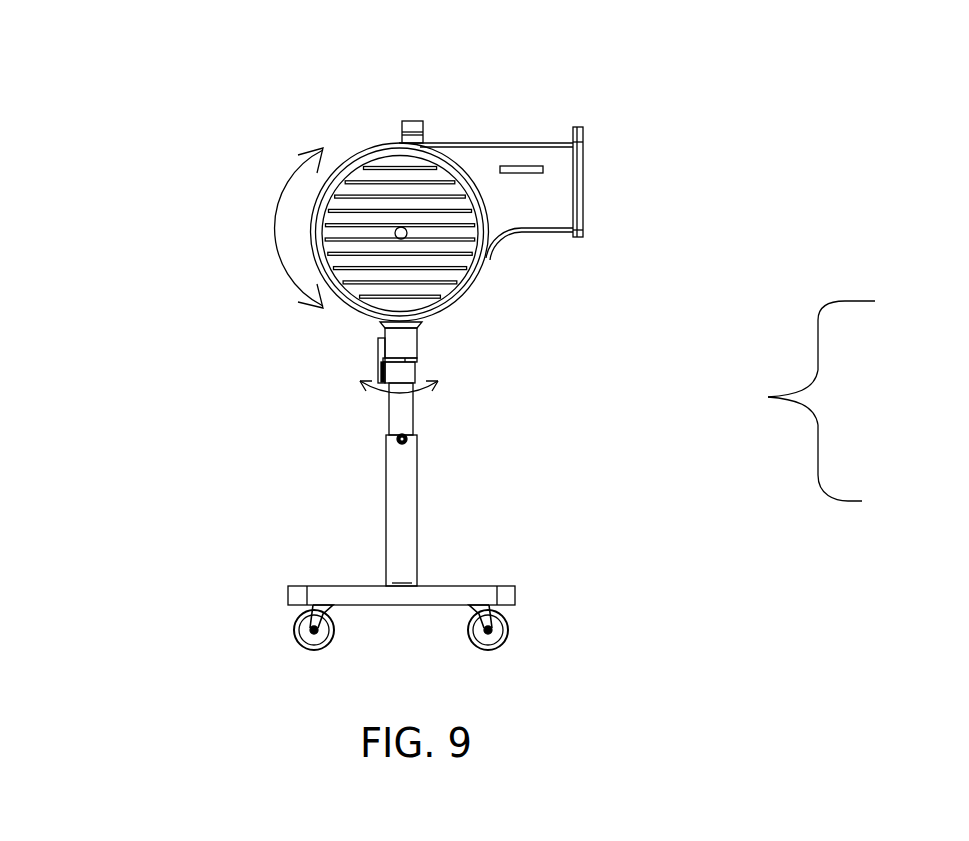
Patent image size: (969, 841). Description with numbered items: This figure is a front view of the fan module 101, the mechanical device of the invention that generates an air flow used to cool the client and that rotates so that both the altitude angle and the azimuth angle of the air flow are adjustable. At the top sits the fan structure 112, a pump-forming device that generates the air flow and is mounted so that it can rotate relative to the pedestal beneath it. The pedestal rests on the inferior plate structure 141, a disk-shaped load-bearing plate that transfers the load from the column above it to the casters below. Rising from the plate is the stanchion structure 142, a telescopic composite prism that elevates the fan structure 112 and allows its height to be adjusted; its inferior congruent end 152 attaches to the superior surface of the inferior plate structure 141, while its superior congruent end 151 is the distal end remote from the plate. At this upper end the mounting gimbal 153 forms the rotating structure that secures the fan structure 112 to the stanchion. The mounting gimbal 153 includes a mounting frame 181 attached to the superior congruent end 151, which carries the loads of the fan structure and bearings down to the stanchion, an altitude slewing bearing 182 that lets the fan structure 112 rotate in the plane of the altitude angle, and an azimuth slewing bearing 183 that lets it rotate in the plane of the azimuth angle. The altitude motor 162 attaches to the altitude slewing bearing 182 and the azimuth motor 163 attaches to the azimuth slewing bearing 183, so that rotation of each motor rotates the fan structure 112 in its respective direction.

The fan module 101 is at (197, 657).
The fan structure 112 is at (432, 158).
The inferior plate structure 141 is at (503, 586).
The stanchion structure 142 is at (415, 428).
The superior congruent end 151 is at (415, 408).
The inferior congruent end 152 is at (417, 560).
The mounting gimbal 153 is at (768, 397).
The altitude motor 162 is at (370, 148).
The azimuth motor 163 is at (423, 336).
The mounting frame 181 is at (583, 130).
The altitude slewing bearing 182 is at (583, 198).
The azimuth slewing bearing 183 is at (380, 347).